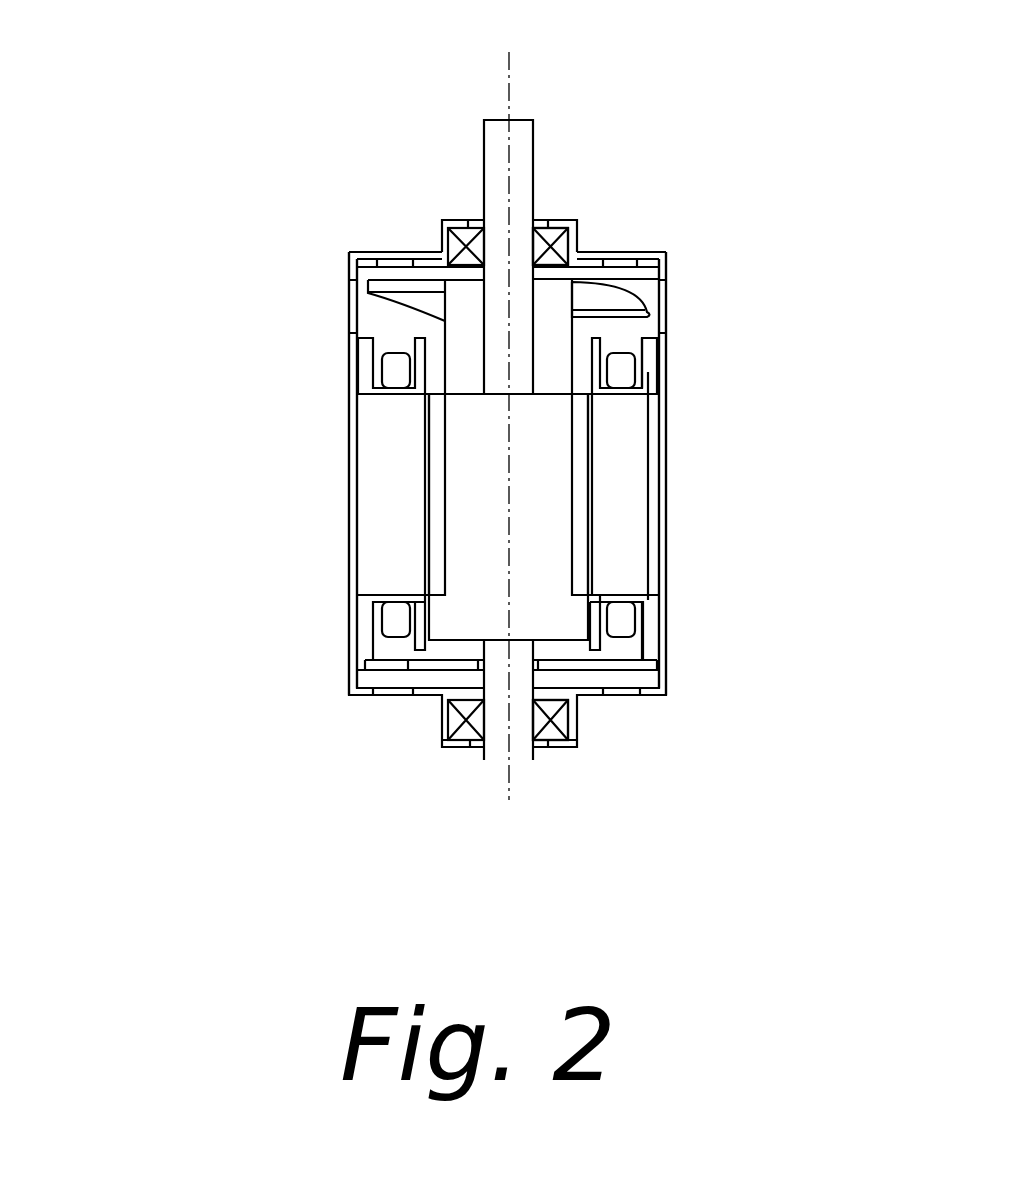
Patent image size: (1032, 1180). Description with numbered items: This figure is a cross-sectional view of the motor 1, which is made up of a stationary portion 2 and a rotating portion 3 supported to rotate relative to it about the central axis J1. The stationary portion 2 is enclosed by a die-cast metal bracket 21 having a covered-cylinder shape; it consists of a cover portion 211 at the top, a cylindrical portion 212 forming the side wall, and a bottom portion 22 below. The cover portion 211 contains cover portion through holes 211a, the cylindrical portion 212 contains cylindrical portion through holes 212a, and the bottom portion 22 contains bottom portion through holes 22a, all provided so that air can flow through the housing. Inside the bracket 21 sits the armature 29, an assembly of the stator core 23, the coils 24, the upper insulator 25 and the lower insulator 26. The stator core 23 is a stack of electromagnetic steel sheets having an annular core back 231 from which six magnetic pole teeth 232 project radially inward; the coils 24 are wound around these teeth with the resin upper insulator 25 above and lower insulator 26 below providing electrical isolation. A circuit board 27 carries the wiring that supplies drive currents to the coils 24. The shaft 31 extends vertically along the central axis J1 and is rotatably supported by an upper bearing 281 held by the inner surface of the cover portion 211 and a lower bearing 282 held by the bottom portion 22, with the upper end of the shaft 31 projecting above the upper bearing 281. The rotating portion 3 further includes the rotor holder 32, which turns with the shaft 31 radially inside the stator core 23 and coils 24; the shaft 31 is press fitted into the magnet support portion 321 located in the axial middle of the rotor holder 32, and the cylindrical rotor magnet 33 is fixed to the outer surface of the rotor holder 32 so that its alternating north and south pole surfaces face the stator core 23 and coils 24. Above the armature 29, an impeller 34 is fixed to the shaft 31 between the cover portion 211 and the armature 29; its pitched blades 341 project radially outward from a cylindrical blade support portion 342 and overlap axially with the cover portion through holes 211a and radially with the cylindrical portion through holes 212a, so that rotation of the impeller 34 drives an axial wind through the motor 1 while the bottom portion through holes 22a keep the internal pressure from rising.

The motor 1 is at (215, 78).
The stationary portion 2 is at (152, 168).
The rotating portion 3 is at (114, 570).
The central axis J1 is at (509, 97).
The bracket 21 is at (772, 272).
The cover portion 211 is at (700, 240).
The cover portion through holes 211a is at (618, 252).
The cylindrical portion 212 is at (668, 405).
The cylindrical portion through holes 212a is at (352, 306).
The bottom portion 22 is at (368, 698).
The bottom portion through holes 22a is at (615, 692).
The stator core 23 is at (209, 462).
The core back 231 is at (385, 418).
The magnetic pole teeth 232 is at (425, 435).
The coils 24 is at (390, 369).
The upper insulator 25 is at (648, 372).
The lower insulator 26 is at (652, 608).
The circuit board 27 is at (622, 662).
The upper bearing 281 is at (550, 232).
The lower bearing 282 is at (548, 728).
The armature 29 is at (798, 462).
The shaft 31 is at (517, 150).
The rotor holder 32 is at (196, 637).
The magnet support portion 321 is at (475, 553).
The rotor magnet 33 is at (440, 512).
The impeller 34 is at (365, 110).
The blades 341 is at (418, 298).
The blade support portion 342 is at (472, 340).